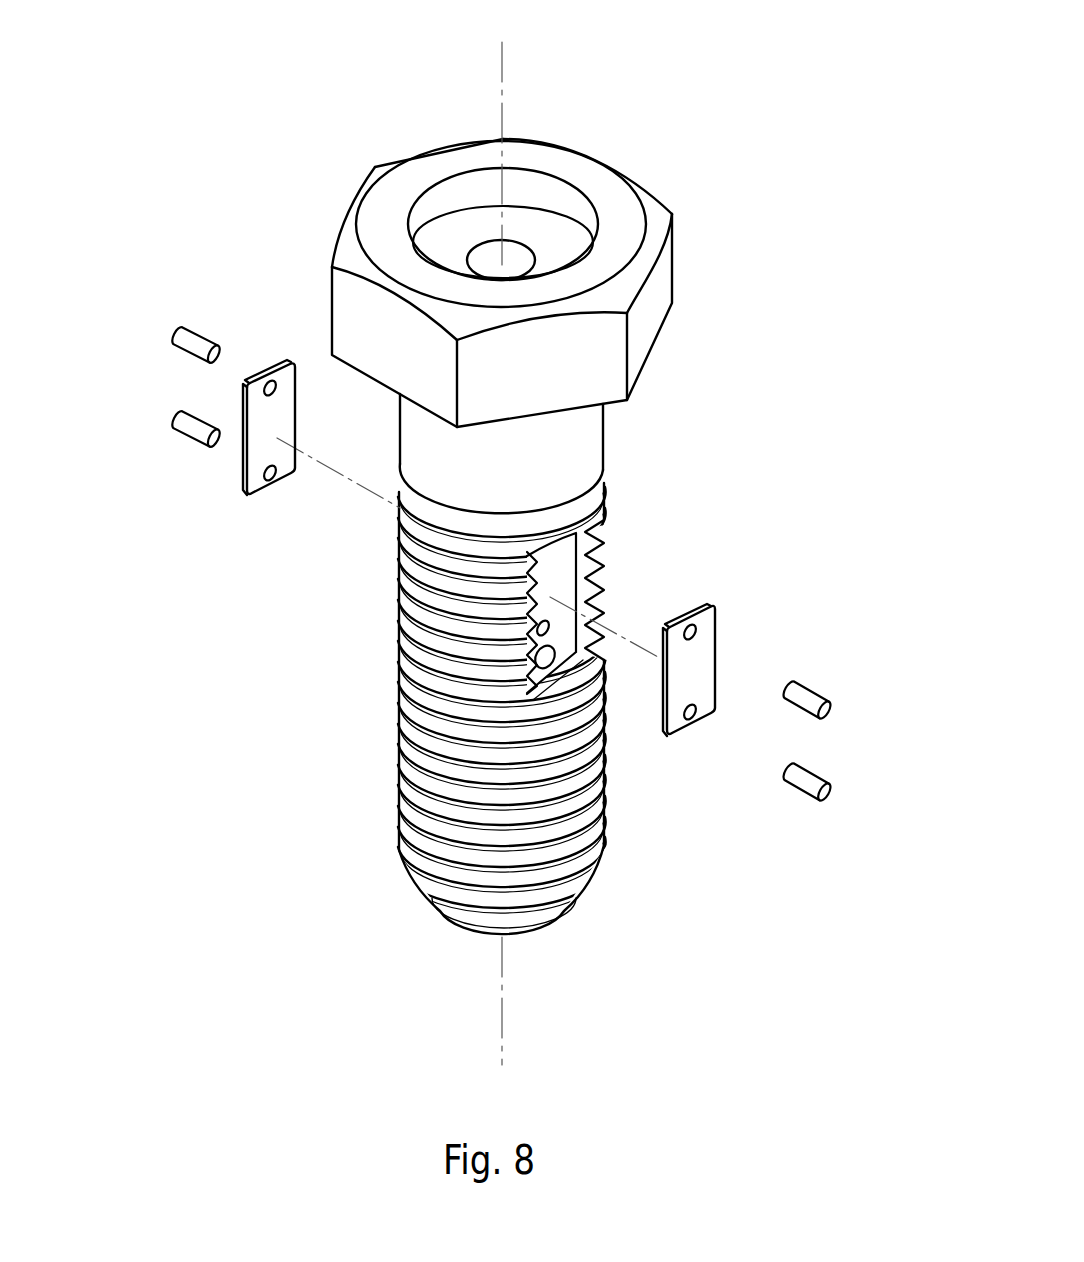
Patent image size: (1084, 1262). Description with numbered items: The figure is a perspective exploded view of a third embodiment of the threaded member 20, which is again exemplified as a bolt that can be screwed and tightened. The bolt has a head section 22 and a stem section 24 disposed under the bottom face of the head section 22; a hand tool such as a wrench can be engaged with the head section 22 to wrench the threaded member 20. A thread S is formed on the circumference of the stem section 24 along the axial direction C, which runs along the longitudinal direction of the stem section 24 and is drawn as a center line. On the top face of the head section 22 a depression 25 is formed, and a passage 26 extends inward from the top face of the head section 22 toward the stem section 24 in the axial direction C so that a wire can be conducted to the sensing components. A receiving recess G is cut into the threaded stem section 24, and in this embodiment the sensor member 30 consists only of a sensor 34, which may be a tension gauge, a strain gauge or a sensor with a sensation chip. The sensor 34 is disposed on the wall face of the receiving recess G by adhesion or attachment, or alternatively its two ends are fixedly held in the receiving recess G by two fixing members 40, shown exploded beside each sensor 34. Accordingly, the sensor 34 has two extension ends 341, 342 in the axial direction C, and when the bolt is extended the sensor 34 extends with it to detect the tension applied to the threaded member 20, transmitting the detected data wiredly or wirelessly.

The threaded member 20 is at (806, 320).
The head section 22 is at (647, 312).
The stem section 24 is at (575, 450).
The depression 25 is at (455, 192).
The passage 26 is at (523, 257).
The thread S is at (450, 757).
The receiving recess G is at (558, 567).
The axial direction C is at (503, 998).
The sensor member 30 is at (233, 485).
The sensor 34 is at (257, 458).
The extension end 341 is at (270, 370).
The extension end 342 is at (270, 483).
The fixing member 40 is at (183, 422).